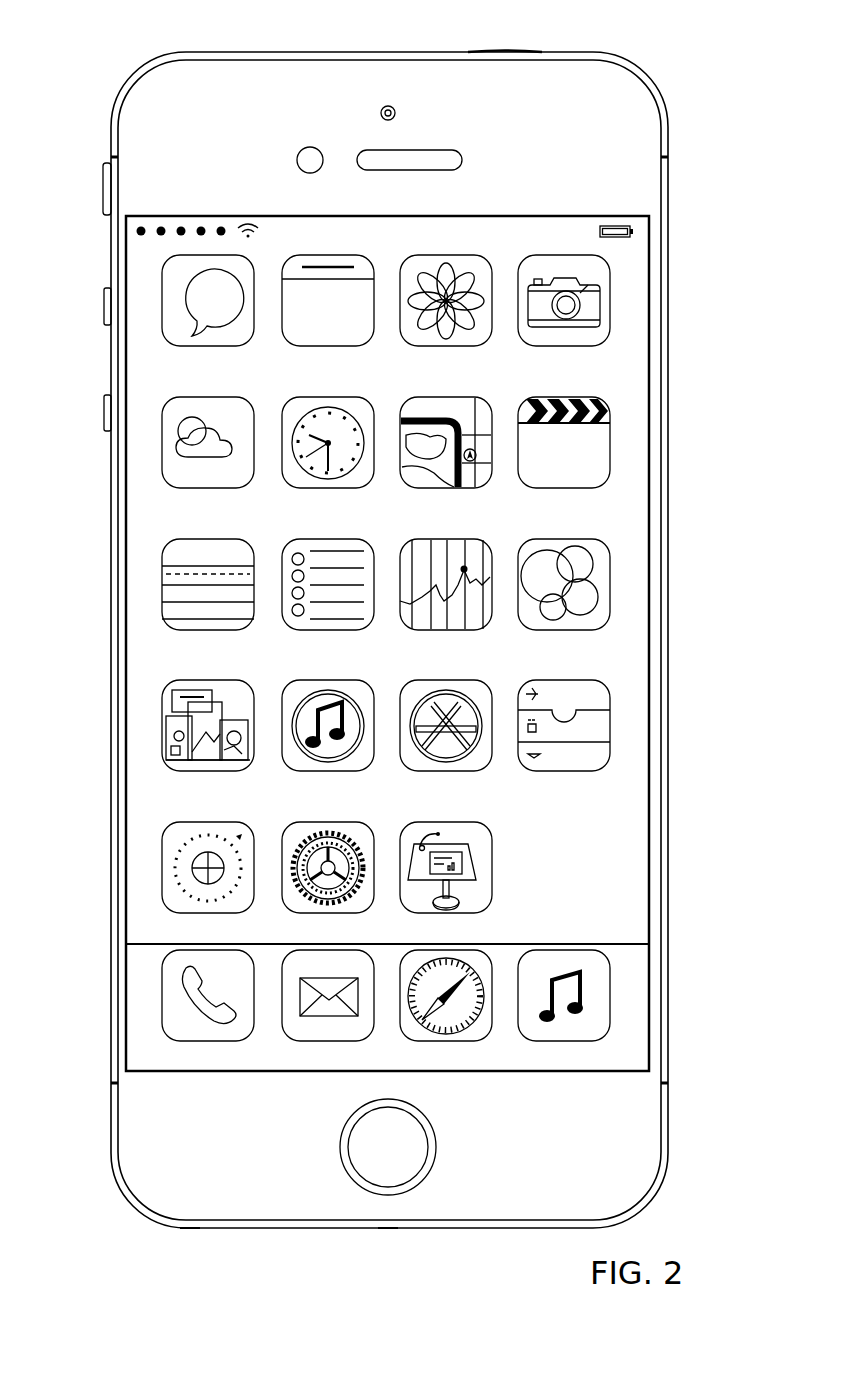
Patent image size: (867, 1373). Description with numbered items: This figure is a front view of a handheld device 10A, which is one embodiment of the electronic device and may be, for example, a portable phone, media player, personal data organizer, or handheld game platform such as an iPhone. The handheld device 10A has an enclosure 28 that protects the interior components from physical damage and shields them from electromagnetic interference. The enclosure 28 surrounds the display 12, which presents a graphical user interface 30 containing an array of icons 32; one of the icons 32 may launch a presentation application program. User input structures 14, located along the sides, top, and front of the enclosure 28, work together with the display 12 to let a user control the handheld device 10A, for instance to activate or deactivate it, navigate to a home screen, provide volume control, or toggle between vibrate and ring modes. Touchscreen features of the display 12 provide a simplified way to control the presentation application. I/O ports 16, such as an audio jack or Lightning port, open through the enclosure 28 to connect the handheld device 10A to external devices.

The handheld device 10A is at (116, 34).
The display 12 is at (655, 566).
The user input structures 14 is at (536, 51).
The I/O ports 16 is at (190, 1230).
The enclosure 28 is at (666, 174).
The graphical user interface 30 is at (632, 362).
The icons 32 is at (470, 881).